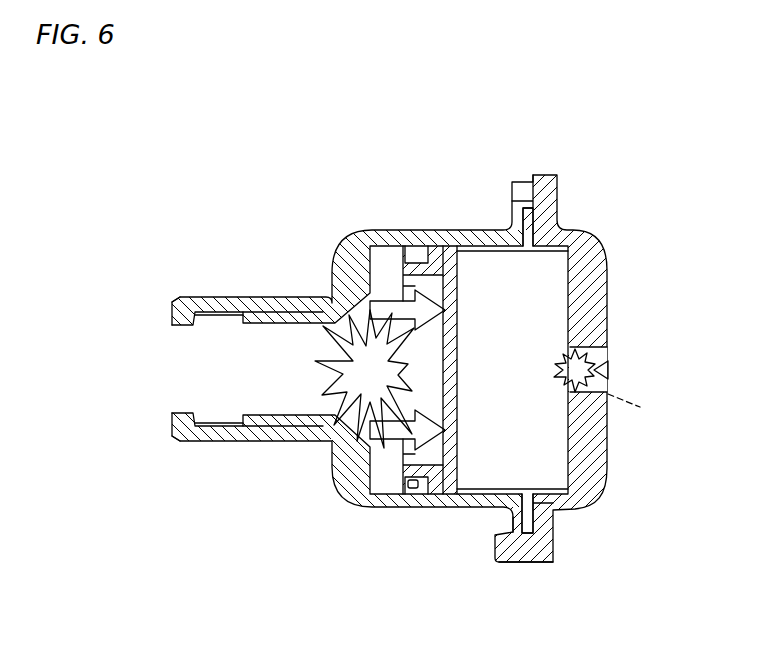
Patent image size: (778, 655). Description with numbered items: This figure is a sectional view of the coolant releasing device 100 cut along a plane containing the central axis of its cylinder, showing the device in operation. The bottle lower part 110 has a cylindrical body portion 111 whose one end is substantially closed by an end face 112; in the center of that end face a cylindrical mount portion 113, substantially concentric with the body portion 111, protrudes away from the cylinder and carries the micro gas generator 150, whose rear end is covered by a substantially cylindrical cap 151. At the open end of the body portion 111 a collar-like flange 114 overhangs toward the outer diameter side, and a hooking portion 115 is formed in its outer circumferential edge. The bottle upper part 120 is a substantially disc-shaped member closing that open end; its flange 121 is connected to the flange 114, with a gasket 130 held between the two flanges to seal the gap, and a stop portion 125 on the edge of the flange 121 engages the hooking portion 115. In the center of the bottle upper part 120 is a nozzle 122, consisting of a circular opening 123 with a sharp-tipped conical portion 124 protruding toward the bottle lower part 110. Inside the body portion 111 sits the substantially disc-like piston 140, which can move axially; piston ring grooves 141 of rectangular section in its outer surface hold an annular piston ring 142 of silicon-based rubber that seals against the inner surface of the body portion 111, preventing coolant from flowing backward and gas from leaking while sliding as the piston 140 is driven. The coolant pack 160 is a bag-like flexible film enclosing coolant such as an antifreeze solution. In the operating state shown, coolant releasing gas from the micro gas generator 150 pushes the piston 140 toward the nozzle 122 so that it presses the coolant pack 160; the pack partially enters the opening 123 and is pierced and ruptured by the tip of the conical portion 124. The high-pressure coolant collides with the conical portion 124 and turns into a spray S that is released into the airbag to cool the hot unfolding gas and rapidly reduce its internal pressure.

The coolant releasing device 100 is at (255, 210).
The bottle lower part 110 is at (360, 217).
The body portion 111 is at (450, 230).
The end face 112 is at (333, 473).
The mount portion 113 is at (268, 420).
The flange 114 is at (513, 202).
The hooking portion 115 is at (513, 532).
The bottle upper part 120 is at (607, 303).
The flange 121 is at (555, 195).
The nozzle 122 is at (641, 346).
The opening 123 is at (595, 392).
The conical portion 124 is at (605, 370).
The stop portion 125 is at (512, 563).
The gasket 130 is at (532, 517).
The piston 140 is at (437, 483).
The piston ring grooves 141 is at (400, 493).
The piston ring 142 is at (420, 487).
The micro gas generator 150 is at (238, 357).
The cap 151 is at (193, 297).
The coolant pack 160 is at (533, 423).
The spray S is at (633, 388).